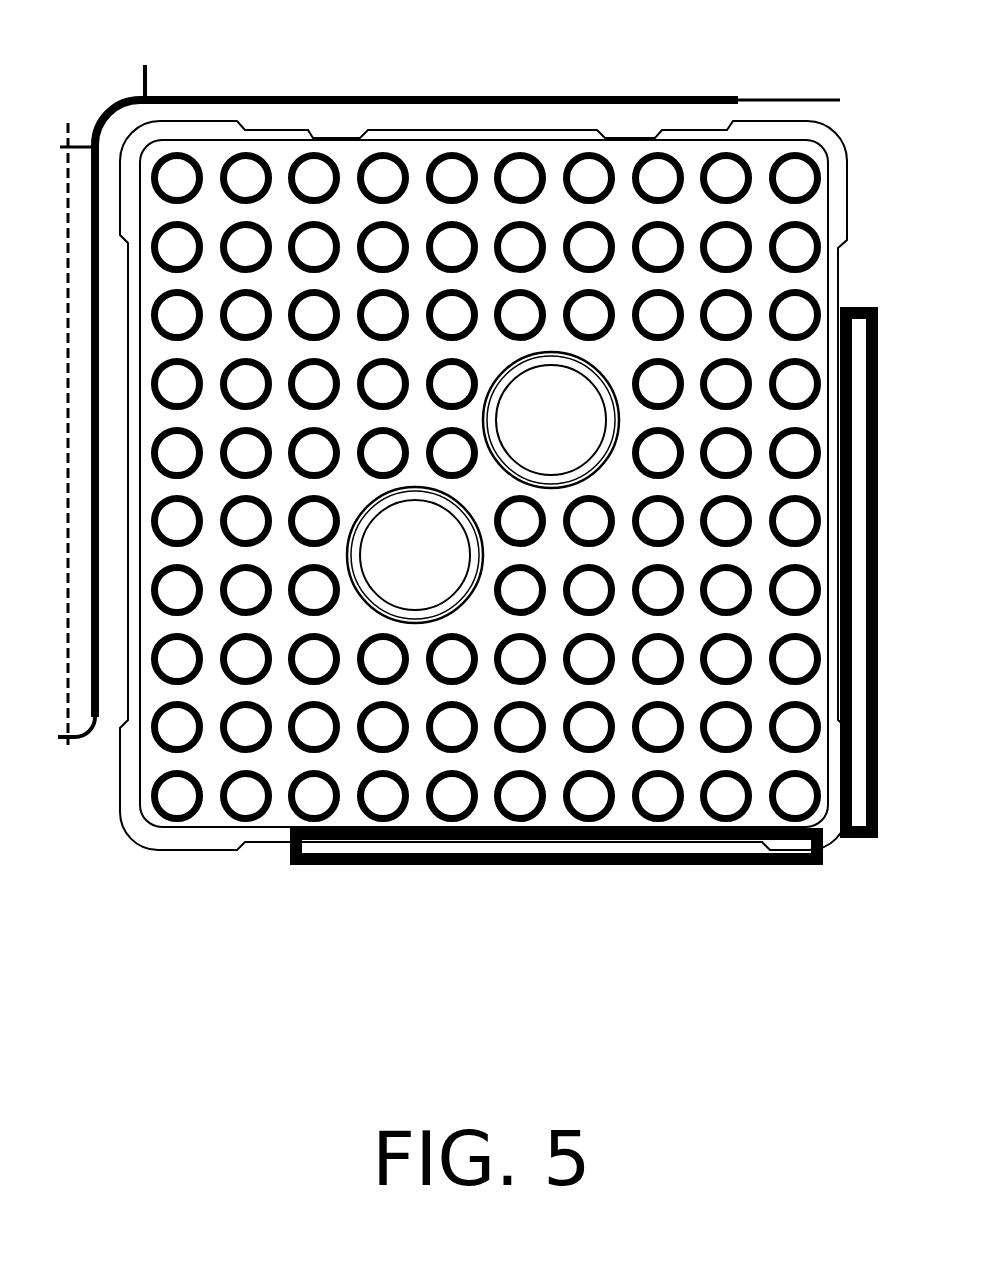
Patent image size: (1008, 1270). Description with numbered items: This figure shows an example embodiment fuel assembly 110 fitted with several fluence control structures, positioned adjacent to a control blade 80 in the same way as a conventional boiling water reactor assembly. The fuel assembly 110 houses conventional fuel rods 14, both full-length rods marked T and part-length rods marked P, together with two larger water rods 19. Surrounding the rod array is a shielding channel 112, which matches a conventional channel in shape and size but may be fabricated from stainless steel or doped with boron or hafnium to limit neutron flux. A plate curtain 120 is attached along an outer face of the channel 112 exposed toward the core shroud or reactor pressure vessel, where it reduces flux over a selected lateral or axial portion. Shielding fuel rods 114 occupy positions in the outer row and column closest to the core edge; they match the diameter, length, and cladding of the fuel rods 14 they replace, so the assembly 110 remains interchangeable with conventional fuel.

The control blade 80 is at (203, 82).
The fuel rods 14 is at (396, 178).
The water rods 19 is at (483, 487).
The fuel assembly 110 is at (122, 944).
The shielding channel 112 is at (830, 826).
The shielding fuel rod 114 is at (797, 316).
The plate curtain 120 is at (638, 864).